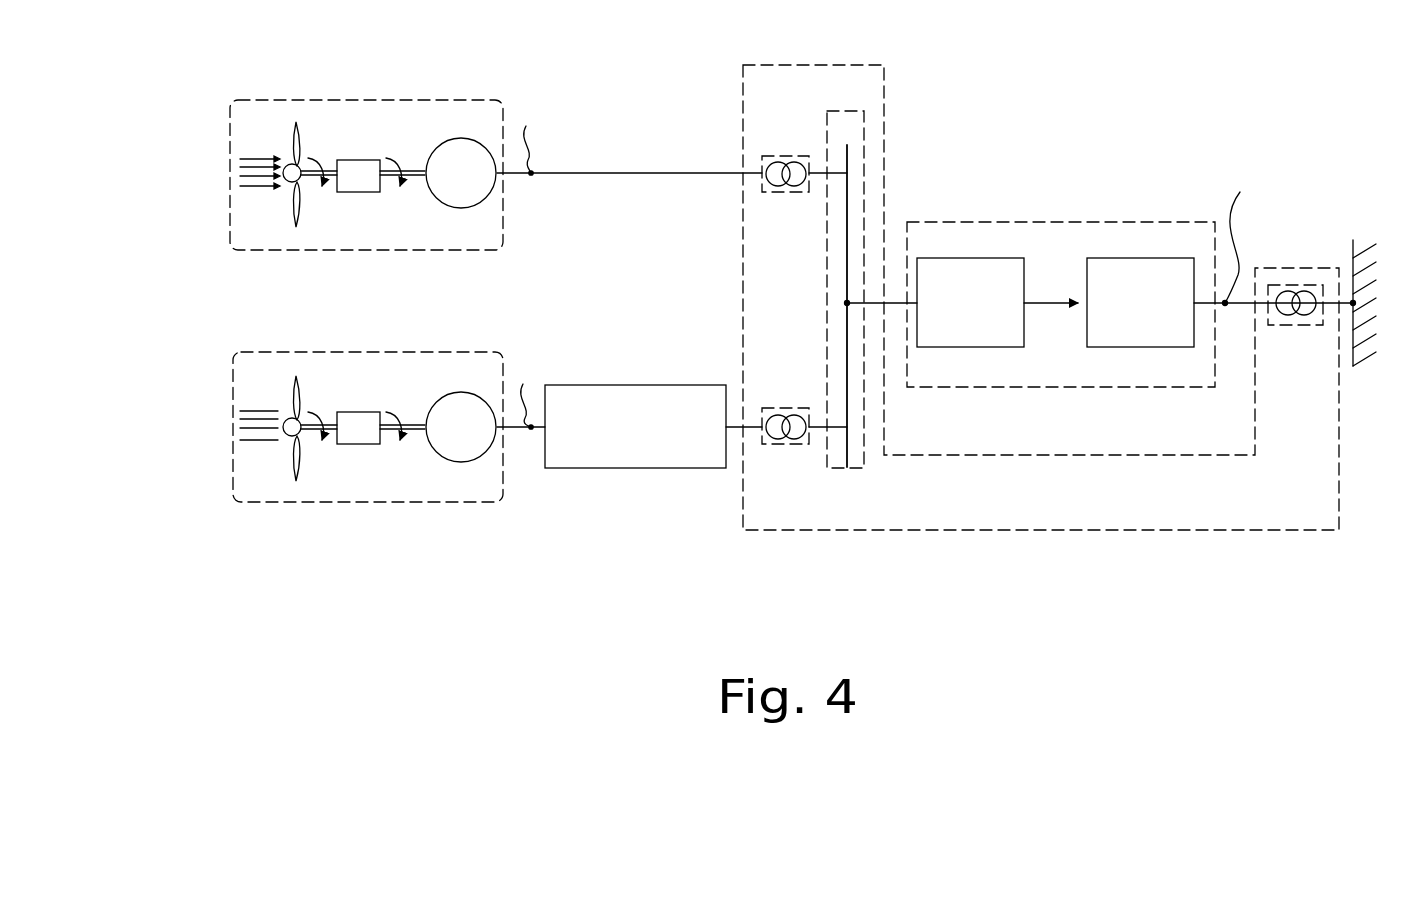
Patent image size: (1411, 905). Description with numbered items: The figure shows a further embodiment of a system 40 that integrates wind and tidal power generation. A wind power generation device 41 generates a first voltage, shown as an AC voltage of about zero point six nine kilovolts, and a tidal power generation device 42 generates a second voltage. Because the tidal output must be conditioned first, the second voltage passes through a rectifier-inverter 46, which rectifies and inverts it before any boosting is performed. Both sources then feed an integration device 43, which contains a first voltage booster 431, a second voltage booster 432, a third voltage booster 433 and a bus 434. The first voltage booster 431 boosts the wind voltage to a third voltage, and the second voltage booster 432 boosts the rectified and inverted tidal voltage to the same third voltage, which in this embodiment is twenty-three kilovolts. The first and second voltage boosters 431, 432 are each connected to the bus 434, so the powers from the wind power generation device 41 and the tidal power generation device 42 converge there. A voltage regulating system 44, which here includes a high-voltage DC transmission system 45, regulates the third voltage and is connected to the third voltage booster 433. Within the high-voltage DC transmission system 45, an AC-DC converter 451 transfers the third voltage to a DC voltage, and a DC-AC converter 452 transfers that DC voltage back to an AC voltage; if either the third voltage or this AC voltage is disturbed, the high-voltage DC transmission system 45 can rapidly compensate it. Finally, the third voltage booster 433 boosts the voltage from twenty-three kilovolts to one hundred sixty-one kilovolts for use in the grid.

The system 40 is at (926, 593).
The wind power generation device 41 is at (232, 182).
The tidal power generation device 42 is at (232, 426).
The integration device 43 is at (865, 65).
The first voltage booster 431 is at (787, 156).
The second voltage booster 432 is at (787, 408).
The third voltage booster 433 is at (1295, 327).
The bus 434 is at (866, 152).
The voltage regulating system 44 is at (932, 388).
The high-voltage DC transmission system 45 is at (1190, 216).
The AC-DC converter 451 is at (970, 348).
The DC-AC converter 452 is at (1135, 348).
The rectifier-inverter 46 is at (585, 469).